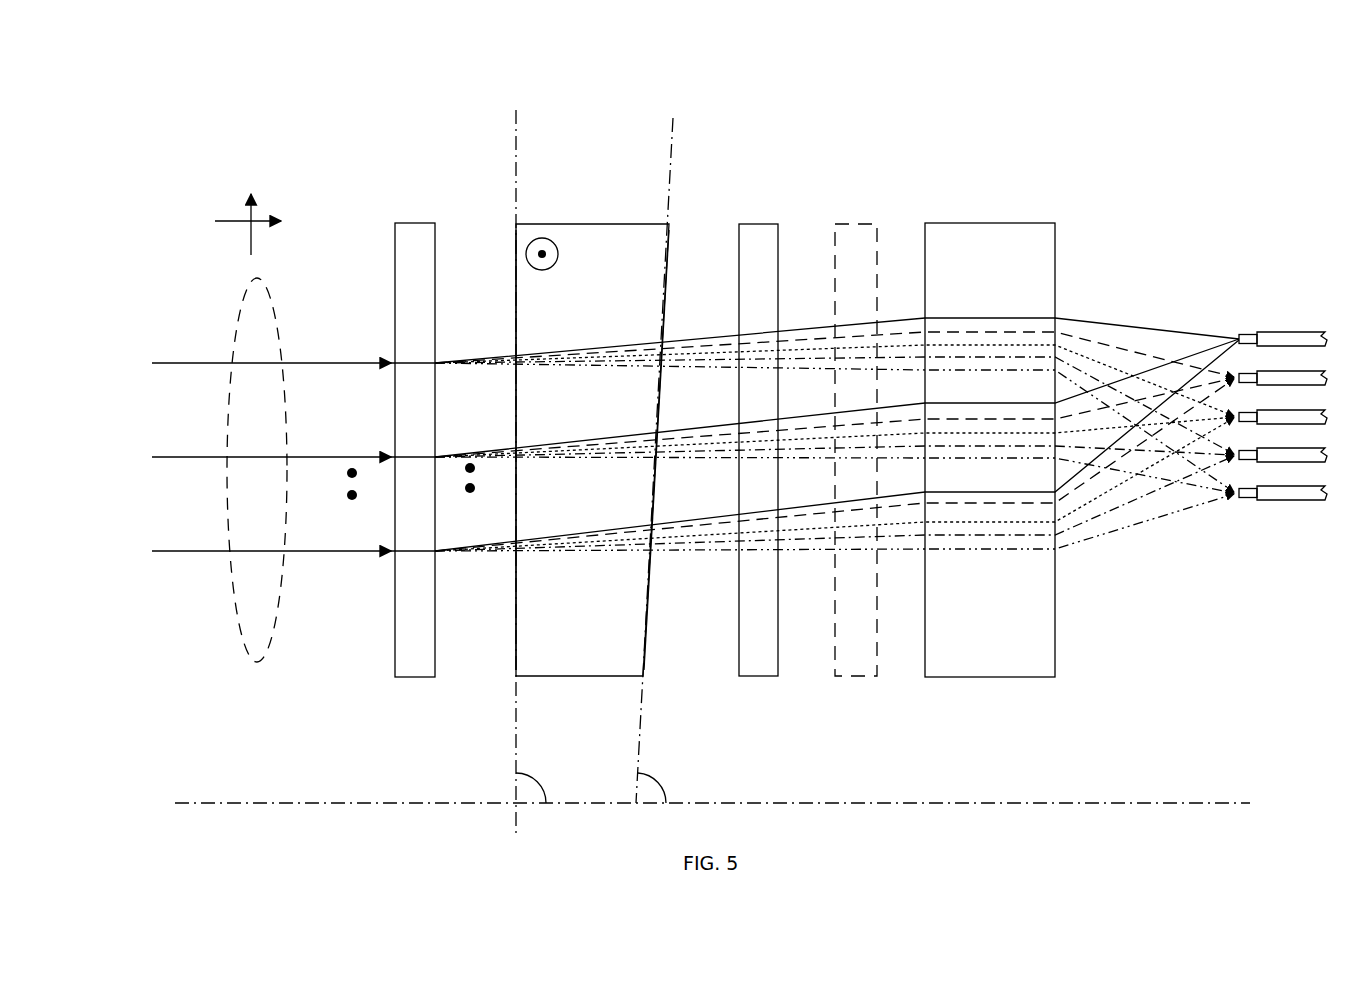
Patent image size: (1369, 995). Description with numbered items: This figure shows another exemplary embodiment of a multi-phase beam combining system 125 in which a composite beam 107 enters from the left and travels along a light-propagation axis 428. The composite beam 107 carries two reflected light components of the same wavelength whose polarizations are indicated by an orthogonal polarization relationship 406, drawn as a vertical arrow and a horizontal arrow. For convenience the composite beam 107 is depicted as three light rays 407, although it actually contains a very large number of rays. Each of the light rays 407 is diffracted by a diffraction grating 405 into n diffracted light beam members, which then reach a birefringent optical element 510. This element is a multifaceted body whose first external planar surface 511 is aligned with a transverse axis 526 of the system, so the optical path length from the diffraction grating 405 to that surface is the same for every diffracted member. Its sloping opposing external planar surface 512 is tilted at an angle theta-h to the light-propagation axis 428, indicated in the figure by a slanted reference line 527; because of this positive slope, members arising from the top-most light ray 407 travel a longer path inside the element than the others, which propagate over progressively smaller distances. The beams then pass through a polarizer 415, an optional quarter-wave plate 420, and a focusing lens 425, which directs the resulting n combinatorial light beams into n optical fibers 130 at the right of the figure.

The multi-phase beam combining system 125 is at (1140, 100).
The optical fibers 130 is at (1273, 298).
The composite beam 107 is at (278, 328).
The orthogonal polarization relationship 406 is at (237, 188).
The light rays 407 is at (308, 362).
The diffraction grating 405 is at (426, 223).
The birefringent optical element 510 is at (606, 224).
The first external planar surface 511 is at (511, 292).
The sloping opposing external planar surface 512 is at (671, 307).
The transverse axis 526 is at (514, 156).
The tilted face reference line 527 is at (675, 120).
The polarizer 415 is at (762, 224).
The quarter-wave plate 420 is at (862, 224).
The focusing lens 425 is at (993, 223).
The light-propagation axis 428 is at (833, 803).